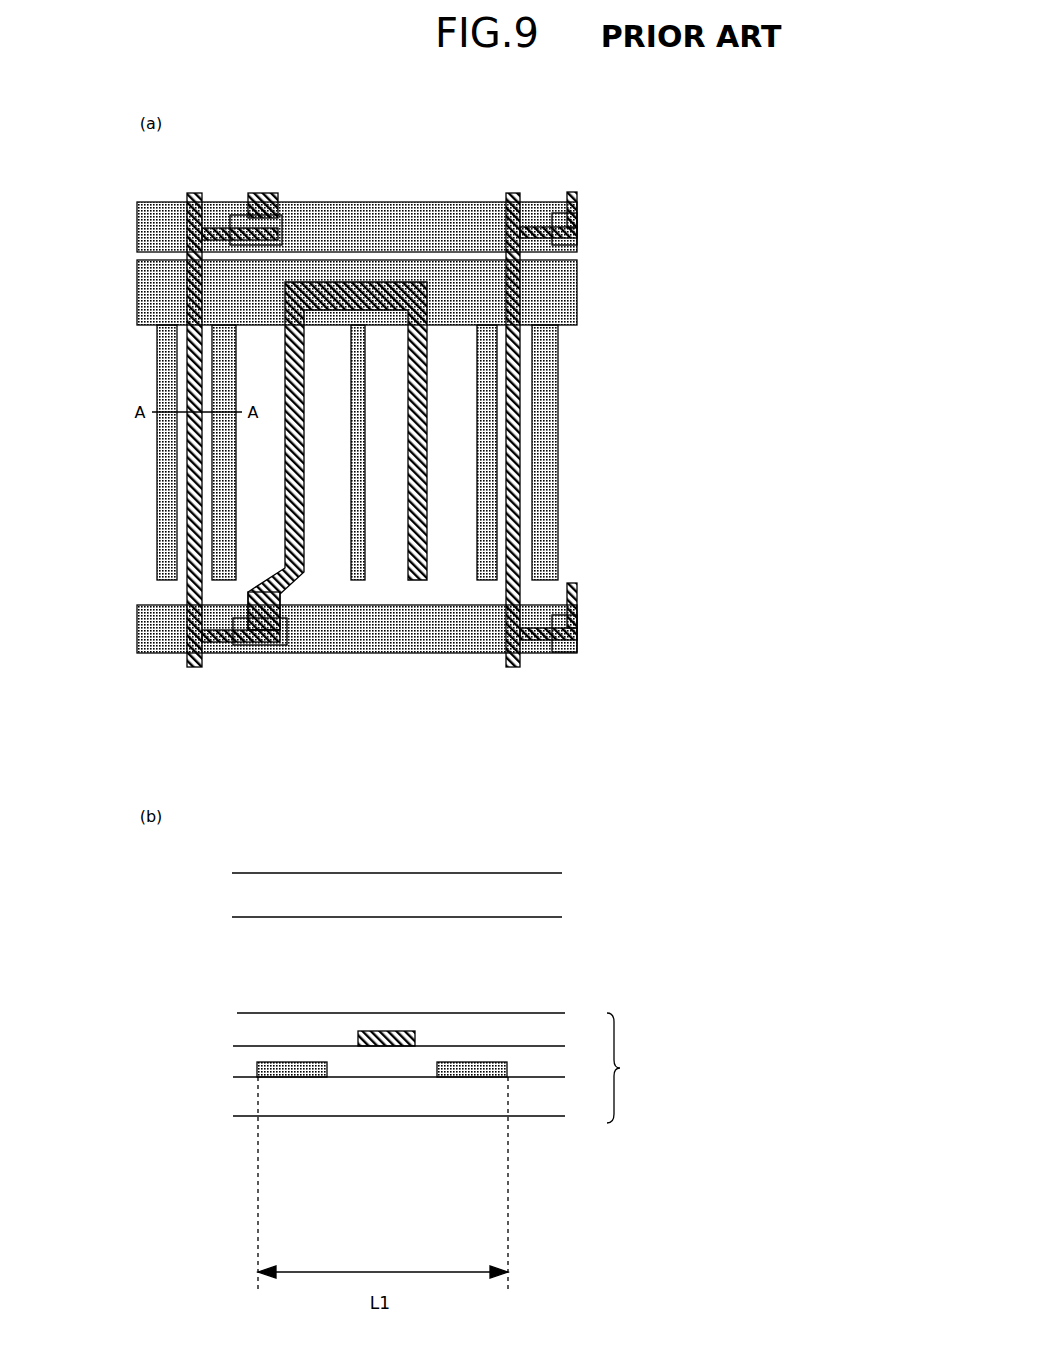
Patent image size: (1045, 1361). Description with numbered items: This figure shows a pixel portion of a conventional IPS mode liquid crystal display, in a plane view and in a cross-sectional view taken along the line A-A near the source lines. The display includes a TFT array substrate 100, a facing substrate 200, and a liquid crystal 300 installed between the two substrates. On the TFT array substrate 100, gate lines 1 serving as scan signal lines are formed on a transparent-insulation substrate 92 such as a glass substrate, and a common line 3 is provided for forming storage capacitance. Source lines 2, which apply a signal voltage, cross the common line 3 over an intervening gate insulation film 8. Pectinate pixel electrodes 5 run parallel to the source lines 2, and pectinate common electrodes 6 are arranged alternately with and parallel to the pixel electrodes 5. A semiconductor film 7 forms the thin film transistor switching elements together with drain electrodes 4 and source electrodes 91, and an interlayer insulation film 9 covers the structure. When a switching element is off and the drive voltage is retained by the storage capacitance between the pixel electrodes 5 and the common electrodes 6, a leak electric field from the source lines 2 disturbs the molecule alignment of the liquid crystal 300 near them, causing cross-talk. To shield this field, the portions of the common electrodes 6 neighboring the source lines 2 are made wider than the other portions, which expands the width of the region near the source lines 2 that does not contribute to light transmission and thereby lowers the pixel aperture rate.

The gate line 1 is at (411, 584).
The source line 2 is at (362, 761).
The common line 3 is at (394, 263).
The drain electrode 4 is at (311, 422).
The pectinate pixel electrode 5 is at (432, 430).
The pectinate common electrode 6 is at (421, 782).
The semiconductor film 7 is at (318, 682).
The source electrode 91 is at (231, 688).
The gate insulation film 8 is at (360, 1067).
The interlayer insulation film 9 is at (364, 1023).
The transparent-insulation substrate 92 is at (359, 1123).
The TFT array substrate 100 is at (681, 1079).
The facing substrate 200 is at (472, 868).
The liquid crystal 300 is at (472, 934).